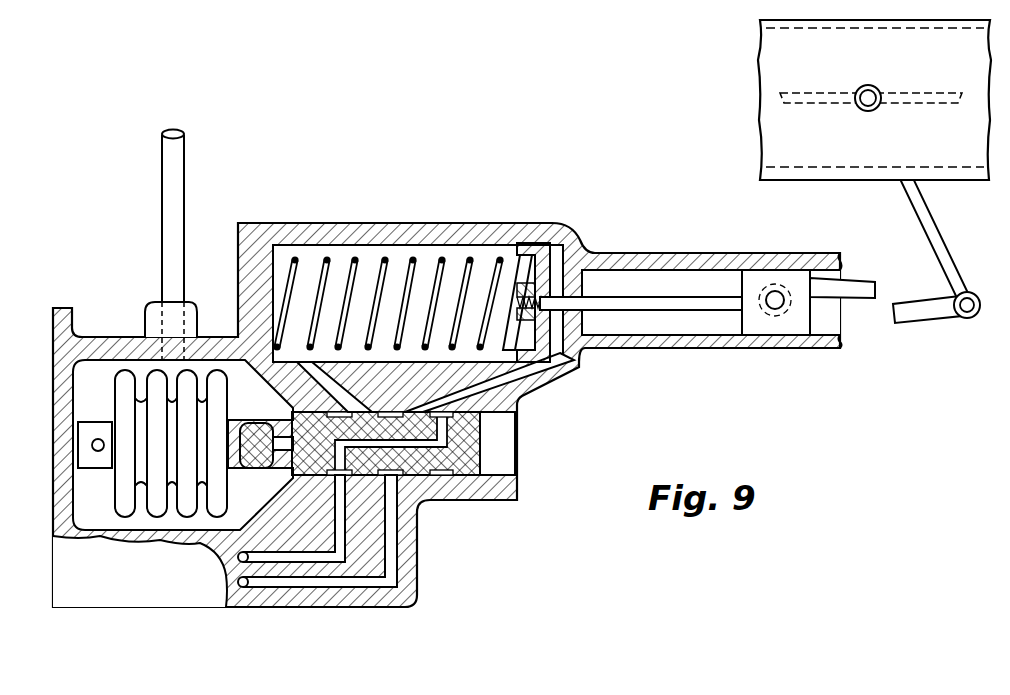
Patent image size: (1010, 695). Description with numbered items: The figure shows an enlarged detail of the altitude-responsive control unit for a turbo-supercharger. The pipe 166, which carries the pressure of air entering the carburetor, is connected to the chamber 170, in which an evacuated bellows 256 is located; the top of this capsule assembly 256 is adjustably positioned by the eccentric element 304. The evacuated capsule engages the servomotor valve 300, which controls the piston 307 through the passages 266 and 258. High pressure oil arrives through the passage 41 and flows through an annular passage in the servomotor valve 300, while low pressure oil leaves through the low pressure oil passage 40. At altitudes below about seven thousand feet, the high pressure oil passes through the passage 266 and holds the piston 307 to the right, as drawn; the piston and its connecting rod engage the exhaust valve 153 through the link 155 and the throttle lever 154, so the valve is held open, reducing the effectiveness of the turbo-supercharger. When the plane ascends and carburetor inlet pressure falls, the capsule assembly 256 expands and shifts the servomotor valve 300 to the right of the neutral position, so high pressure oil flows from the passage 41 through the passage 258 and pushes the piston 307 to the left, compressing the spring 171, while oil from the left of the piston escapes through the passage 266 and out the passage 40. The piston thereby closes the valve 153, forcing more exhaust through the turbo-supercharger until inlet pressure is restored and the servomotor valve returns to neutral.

The pipe 166 is at (168, 195).
The spring 171 is at (292, 263).
The piston 307 is at (516, 245).
The exhaust valve 153 is at (800, 103).
The throttle lever 154 is at (922, 222).
The rod 155 is at (920, 306).
The chamber 170 is at (116, 394).
The evacuated bellows 256 is at (120, 398).
The passage 266 is at (312, 384).
The passage 258 is at (520, 373).
The eccentric element 304 is at (93, 455).
The servomotor valve 300 is at (480, 453).
The low pressure oil passage 40 is at (280, 556).
The passage 41 is at (328, 580).